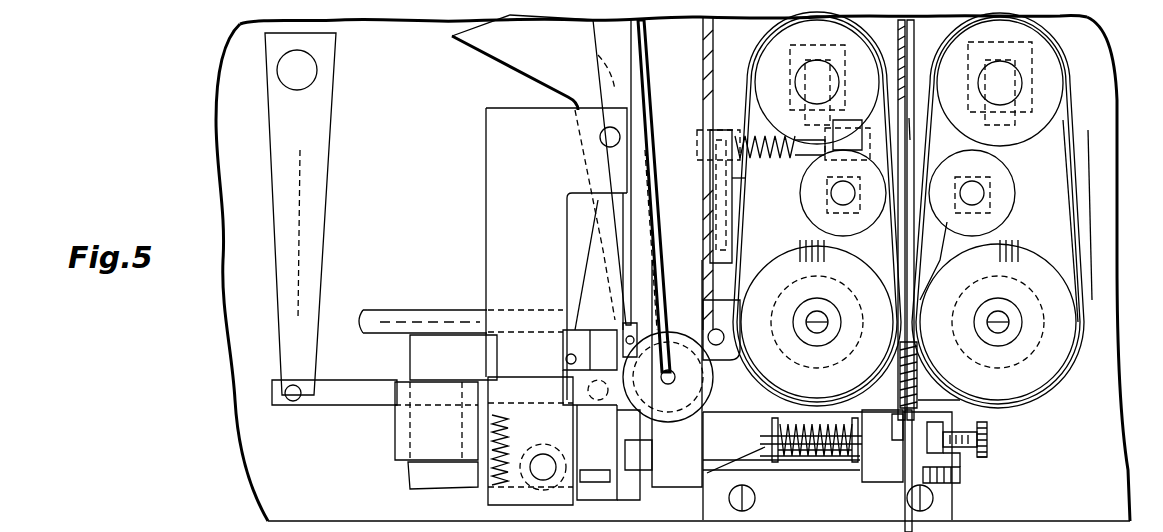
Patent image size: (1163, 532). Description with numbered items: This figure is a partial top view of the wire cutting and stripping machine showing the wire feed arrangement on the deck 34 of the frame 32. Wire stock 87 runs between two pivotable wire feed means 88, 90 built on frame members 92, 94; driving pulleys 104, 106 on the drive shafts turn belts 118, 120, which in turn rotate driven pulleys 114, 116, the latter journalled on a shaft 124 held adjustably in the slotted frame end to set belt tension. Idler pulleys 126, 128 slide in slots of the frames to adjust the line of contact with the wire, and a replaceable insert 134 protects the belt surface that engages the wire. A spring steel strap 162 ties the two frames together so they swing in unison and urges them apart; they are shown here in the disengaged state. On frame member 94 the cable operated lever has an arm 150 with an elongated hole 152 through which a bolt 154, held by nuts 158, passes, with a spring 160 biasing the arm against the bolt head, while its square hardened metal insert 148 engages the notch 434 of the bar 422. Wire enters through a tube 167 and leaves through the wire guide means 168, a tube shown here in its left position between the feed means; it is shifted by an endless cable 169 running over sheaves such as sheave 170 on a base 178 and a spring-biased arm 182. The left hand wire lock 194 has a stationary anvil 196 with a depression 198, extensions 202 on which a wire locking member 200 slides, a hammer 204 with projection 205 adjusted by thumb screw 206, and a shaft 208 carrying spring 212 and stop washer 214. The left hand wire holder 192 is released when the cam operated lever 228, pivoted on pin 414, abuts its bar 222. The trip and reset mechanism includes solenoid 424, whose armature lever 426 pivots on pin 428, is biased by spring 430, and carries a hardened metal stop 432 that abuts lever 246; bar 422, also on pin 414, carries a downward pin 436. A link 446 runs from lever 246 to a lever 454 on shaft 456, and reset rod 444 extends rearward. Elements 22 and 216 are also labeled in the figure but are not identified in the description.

The frame 32 is at (1125, 458).
The deck 34 is at (1100, 490).
The lever 454 is at (305, 258).
The shaft 456 is at (312, 70).
The reset rod 444 is at (398, 322).
The link 446 is at (345, 390).
The solenoid 424 is at (410, 433).
The armature lever 426 is at (425, 476).
The spring 430 is at (480, 488).
The pin 428 is at (543, 472).
The hardened metal stop 432 is at (596, 483).
The notch 434 is at (597, 331).
The pin 436 is at (566, 360).
The bar 422 is at (585, 257).
The pin 414 is at (610, 147).
The cam operated lever 228 is at (512, 60).
The lever 246 is at (598, 36).
The square hardened metal insert 148 is at (627, 322).
The sheave 170 is at (708, 378).
The bracket 216 is at (653, 485).
The arm 150 is at (715, 206).
The bolt 154 is at (697, 135).
The elongated hole 152 is at (710, 172).
The belt 120 is at (730, 180).
The wire feed means 90 is at (741, 100).
The driven pulley 116 is at (775, 47).
The shaft 124 is at (812, 65).
The nuts 158 is at (853, 108).
The spring 160 is at (770, 160).
The idler pulley 128 is at (830, 185).
The frame member 94 is at (792, 232).
The driving pulley 106 is at (808, 280).
The wire guide means 168 is at (898, 45).
The wire stock 87 is at (914, 25).
The endless cable 169 is at (909, 118).
The stationary anvil 196 is at (876, 418).
The wire feed means 88 is at (1072, 118).
The driven pulley 114 is at (1050, 72).
The hub 22 is at (998, 68).
The belt 118 is at (1066, 147).
The replaceable insert 134 is at (1076, 200).
The idler pulley 126 is at (968, 184).
The spring steel strap 162 is at (947, 222).
The frame member 92 is at (1020, 225).
The driving pulley 104 is at (1008, 388).
The tube 167 is at (920, 400).
The base 178 is at (704, 480).
The stop washer 214 is at (780, 416).
The spring 212 is at (835, 458).
The depression 198 is at (882, 446).
The projection 205 is at (893, 442).
The left hand wire holder 192 is at (902, 486).
The wire locking member 200 is at (953, 429).
The extensions 202 is at (988, 437).
The thumb screw 206 is at (988, 448).
The left hand wire lock 194 is at (956, 460).
The hammer 204 is at (955, 476).
The arm 182 is at (742, 456).
The shaft 208 is at (810, 456).
The bar 222 is at (812, 460).